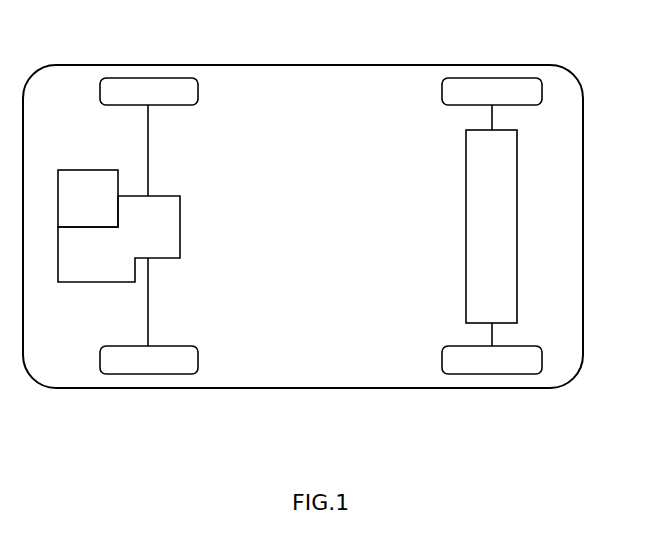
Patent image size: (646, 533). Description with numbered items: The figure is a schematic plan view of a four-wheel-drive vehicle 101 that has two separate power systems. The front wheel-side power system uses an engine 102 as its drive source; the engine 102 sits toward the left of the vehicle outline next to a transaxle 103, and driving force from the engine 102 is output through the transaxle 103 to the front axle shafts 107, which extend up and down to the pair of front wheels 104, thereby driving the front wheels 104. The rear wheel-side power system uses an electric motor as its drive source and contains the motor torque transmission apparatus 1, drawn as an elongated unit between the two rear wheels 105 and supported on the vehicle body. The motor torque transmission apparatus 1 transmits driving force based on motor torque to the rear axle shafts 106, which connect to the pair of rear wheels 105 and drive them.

The motor torque transmission apparatus 1 is at (453, 255).
The four-wheel-drive vehicle 101 is at (585, 133).
The engine 102 is at (87, 168).
The transaxle 103 is at (87, 284).
The front wheels 104 is at (145, 90).
The rear wheels 105 is at (484, 88).
The rear axle shafts 106 is at (493, 117).
The front axle shafts 107 is at (150, 155).